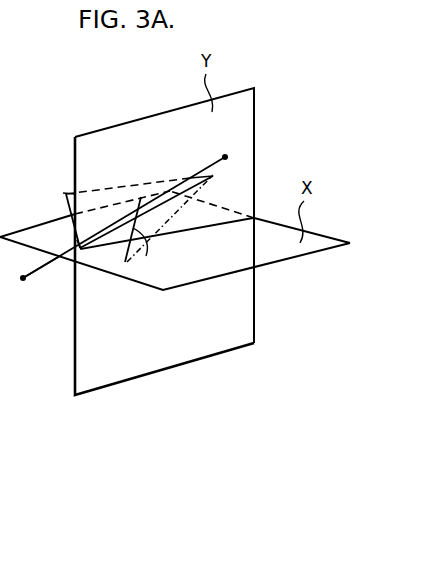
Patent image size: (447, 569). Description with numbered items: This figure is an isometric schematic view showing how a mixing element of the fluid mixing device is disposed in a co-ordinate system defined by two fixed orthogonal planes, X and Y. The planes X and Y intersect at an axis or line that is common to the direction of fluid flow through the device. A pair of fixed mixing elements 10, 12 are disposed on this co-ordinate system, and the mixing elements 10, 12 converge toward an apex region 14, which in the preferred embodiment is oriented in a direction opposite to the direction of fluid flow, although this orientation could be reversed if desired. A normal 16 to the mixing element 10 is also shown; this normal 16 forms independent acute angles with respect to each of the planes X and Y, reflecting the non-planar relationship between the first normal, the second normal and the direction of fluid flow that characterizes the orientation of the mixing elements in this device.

The mixing element 10 is at (65, 194).
The mixing element 12 is at (138, 256).
The apex region 14 is at (213, 177).
The normal 16 is at (33, 278).